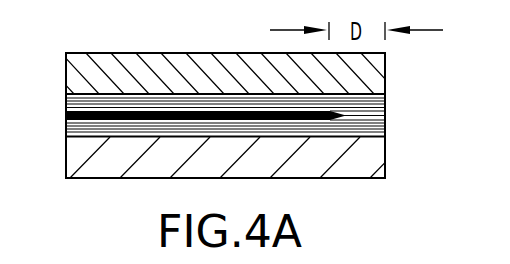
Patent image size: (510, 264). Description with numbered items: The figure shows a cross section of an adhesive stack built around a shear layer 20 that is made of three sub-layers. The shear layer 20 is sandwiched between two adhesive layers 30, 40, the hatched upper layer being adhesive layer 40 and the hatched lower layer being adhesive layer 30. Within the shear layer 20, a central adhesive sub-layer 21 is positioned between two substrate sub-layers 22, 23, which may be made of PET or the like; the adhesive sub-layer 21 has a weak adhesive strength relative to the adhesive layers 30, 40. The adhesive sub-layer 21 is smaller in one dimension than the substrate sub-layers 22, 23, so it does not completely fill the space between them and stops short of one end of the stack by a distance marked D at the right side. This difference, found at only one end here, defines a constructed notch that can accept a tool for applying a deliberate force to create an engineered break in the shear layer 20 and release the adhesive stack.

The shear layer 20 is at (224, 112).
The adhesive sub-layer 21 is at (65, 118).
The substrate sub-layer 22 is at (65, 100).
The substrate sub-layer 23 is at (70, 128).
The adhesive layer 30 is at (386, 155).
The adhesive layer 40 is at (386, 75).